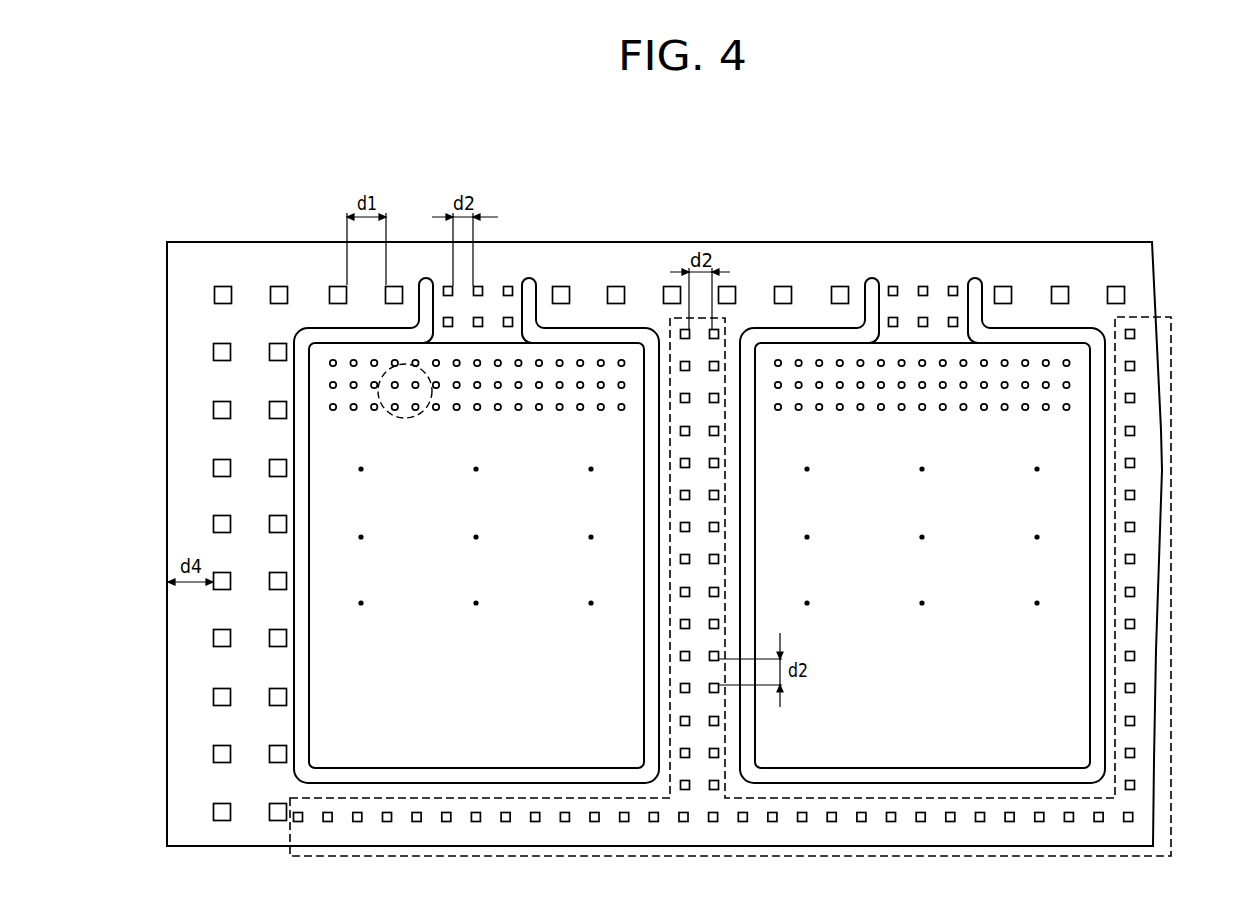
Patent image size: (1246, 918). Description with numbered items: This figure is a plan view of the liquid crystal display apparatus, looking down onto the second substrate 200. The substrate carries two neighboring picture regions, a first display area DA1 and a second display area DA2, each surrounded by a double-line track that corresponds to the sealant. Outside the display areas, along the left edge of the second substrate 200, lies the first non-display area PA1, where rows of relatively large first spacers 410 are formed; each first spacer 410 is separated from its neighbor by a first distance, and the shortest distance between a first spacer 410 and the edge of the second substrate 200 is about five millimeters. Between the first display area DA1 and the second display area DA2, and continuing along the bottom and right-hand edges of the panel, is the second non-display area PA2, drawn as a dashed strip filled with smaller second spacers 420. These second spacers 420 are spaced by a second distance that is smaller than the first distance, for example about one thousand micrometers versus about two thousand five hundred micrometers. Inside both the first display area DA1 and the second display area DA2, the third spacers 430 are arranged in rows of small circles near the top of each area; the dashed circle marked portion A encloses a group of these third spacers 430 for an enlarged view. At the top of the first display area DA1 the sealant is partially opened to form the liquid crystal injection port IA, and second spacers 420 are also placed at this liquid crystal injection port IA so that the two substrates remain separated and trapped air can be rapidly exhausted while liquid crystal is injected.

The second substrate 200 is at (1147, 273).
The first spacer 410 is at (223, 297).
The second spacer 420 is at (447, 288).
The third spacer 430 is at (581, 360).
The first display area DA1 is at (440, 734).
The second display area DA2 is at (944, 734).
The first non-display area PA1 is at (189, 782).
The second non-display area PA2 is at (1170, 400).
The liquid crystal injection port IA is at (498, 303).
The portion A is at (404, 418).